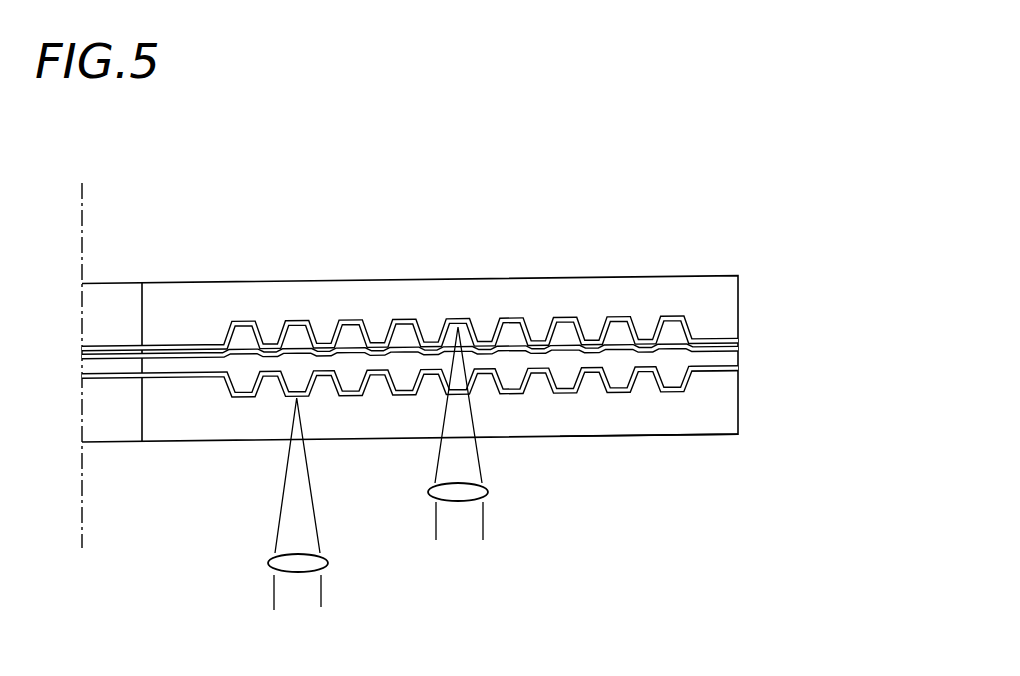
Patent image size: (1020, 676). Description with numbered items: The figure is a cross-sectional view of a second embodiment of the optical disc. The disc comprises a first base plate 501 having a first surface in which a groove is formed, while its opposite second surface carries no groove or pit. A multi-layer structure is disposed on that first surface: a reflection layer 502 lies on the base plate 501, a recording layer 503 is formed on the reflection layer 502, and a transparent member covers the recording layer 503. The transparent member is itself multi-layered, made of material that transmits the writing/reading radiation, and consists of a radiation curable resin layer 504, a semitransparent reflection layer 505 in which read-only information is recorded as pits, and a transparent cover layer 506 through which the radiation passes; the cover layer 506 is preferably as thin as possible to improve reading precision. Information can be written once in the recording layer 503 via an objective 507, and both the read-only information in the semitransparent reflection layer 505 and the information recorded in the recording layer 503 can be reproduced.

The first base plate 501 is at (548, 283).
The reflection layer 502 is at (683, 330).
The recording layer 503 is at (677, 332).
The radiation curable resin layer 504 is at (697, 358).
The semitransparent reflection layer 505 is at (686, 390).
The transparent cover layer 506 is at (620, 424).
The objective 507 is at (472, 488).